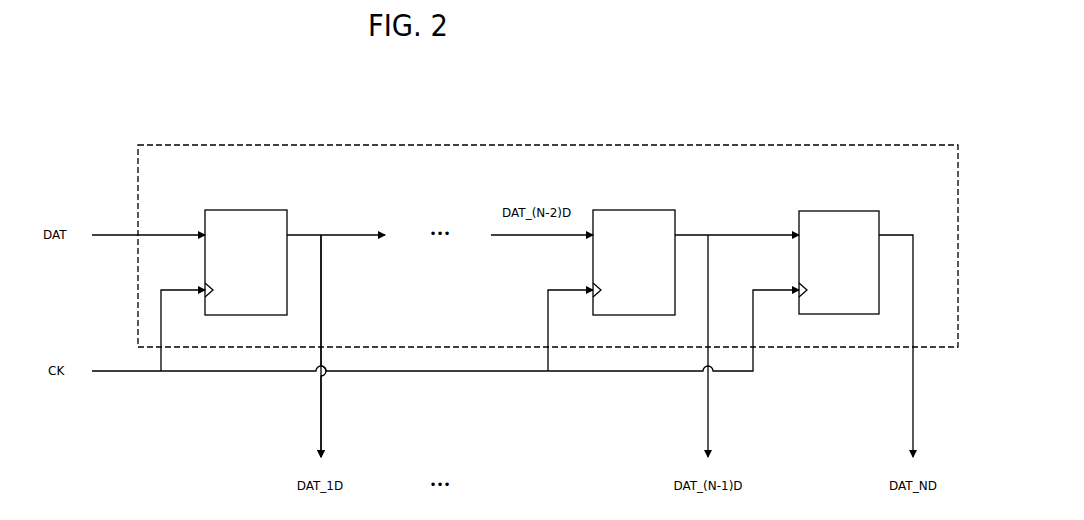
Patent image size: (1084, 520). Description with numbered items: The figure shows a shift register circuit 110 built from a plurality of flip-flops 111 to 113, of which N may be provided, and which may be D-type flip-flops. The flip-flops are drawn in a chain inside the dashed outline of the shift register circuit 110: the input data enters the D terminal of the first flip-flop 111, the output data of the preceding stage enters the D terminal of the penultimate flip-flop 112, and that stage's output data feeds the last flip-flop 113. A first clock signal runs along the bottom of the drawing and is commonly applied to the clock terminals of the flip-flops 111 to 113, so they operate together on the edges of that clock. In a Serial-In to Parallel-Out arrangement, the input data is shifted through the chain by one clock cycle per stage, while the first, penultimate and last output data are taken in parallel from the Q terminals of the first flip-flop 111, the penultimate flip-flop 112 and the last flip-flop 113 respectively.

The shift register circuit 110 is at (915, 103).
The first flip-flop 111 is at (248, 210).
The (N−1)-th flip-flop 112 is at (637, 210).
The N-th flip-flop 113 is at (842, 211).